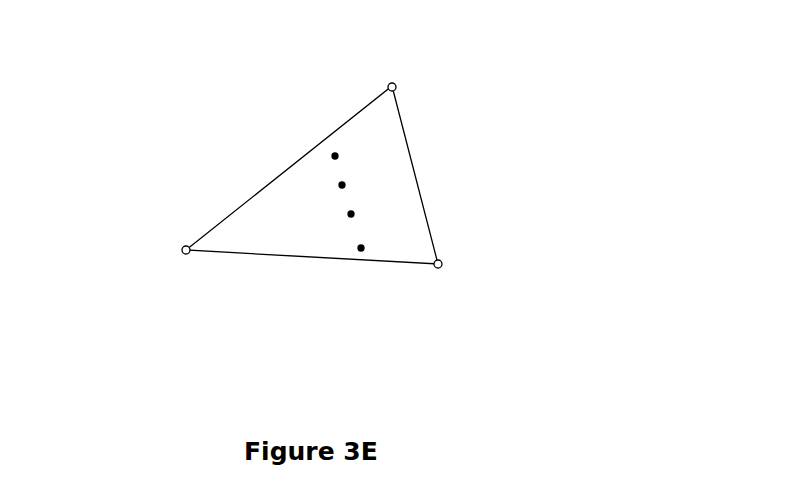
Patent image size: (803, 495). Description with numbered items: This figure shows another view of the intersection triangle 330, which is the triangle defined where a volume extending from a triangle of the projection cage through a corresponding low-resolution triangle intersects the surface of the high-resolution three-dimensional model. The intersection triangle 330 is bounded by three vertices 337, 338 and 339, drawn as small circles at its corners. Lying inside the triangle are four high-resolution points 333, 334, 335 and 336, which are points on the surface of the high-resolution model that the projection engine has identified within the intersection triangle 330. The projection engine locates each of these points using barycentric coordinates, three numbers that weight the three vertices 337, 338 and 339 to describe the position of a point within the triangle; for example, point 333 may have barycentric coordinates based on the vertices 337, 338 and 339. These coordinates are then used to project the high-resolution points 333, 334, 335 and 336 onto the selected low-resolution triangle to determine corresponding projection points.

The intersection triangle 330 is at (291, 166).
The high-resolution point 333 is at (337, 154).
The high-resolution point 334 is at (344, 184).
The high-resolution point 335 is at (353, 213).
The high-resolution point 336 is at (360, 251).
The vertex 337 is at (395, 83).
The vertex 338 is at (442, 263).
The vertex 339 is at (182, 251).